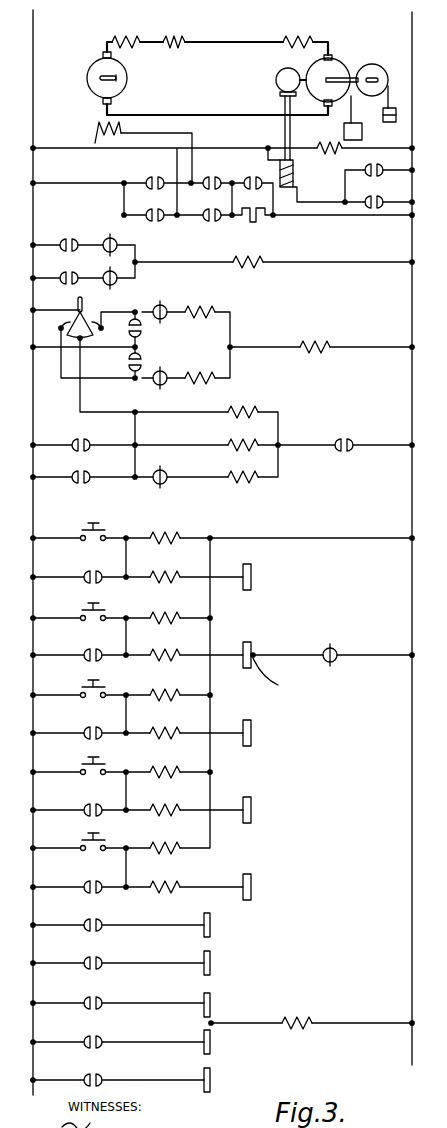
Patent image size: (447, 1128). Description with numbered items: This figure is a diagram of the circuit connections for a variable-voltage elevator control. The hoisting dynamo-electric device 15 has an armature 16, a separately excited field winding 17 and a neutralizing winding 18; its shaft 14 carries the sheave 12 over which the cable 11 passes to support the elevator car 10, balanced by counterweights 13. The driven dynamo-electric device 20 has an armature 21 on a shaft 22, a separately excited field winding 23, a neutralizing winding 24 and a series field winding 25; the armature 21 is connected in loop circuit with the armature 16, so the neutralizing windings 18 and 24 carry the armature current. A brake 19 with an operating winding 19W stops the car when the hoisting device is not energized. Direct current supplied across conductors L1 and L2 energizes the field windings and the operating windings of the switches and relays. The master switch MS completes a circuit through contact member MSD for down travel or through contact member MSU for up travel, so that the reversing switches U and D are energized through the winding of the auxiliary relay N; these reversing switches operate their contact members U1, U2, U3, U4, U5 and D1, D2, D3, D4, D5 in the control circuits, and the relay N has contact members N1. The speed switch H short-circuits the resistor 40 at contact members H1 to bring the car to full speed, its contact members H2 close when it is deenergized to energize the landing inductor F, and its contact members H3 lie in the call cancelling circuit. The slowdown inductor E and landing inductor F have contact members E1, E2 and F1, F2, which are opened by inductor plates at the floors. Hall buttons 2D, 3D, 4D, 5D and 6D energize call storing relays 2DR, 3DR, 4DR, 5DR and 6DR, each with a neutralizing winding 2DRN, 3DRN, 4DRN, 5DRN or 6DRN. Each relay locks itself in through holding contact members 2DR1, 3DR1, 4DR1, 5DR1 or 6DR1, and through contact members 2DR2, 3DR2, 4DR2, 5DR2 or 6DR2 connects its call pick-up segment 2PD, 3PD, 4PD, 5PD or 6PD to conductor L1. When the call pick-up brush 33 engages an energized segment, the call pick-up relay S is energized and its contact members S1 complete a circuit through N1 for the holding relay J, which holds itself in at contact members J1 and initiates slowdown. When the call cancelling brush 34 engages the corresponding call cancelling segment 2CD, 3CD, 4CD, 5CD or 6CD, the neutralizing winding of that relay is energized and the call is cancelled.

The conductor L1 is at (33, 36).
The conductor L2 is at (412, 42).
The driven dynamo-electric device 20 is at (78, 55).
The armature 21 is at (118, 73).
The shaft 22 is at (119, 80).
The neutralizing winding 24 is at (128, 37).
The series field winding 25 is at (176, 37).
The neutralizing winding 18 is at (296, 36).
The hoisting dynamo-electric device 15 is at (352, 27).
The armature 16 is at (310, 70).
The shaft 14 is at (338, 67).
The sheave 12 is at (376, 64).
The cable 11 is at (387, 101).
The counterweights 13 is at (383, 118).
The elevator car 10 is at (362, 132).
The separately excited field winding 17 is at (319, 143).
The brake 19 is at (268, 104).
The operating winding 19W is at (293, 178).
The separately excited field winding 23 is at (122, 131).
The up contact U2 is at (163, 177).
The down contact D1 is at (220, 177).
The contact members H1 is at (260, 177).
The up contact U1 is at (382, 166).
The down contact D2 is at (382, 198).
The down contact D3 is at (148, 209).
The up contact U3 is at (205, 209).
The resistor 40 is at (258, 224).
The up contact U4 is at (70, 239).
The contact members E1 is at (115, 239).
The down contact D4 is at (65, 272).
The contact members E2 is at (113, 275).
The speed switch H is at (242, 258).
The master switch MS is at (68, 306).
The contact member MSD is at (60, 328).
The contact member MSU is at (103, 330).
The contact members F1 is at (166, 306).
The reversing switch U is at (206, 307).
The up contact U5 is at (141, 329).
The down contact D5 is at (141, 362).
The reversing switch D is at (205, 373).
The contact members F2 is at (156, 386).
The auxiliary relay N is at (318, 341).
The holding relay J is at (254, 408).
The contact members J1 is at (98, 433).
The slowdown inductor E is at (250, 441).
The contact members S1 is at (98, 466).
The contact members H2 is at (164, 471).
The landing inductor F is at (250, 473).
The contact members N1 is at (358, 432).
The hall button 6D is at (97, 530).
The call storing relay 6DR is at (176, 533).
The relay contact 6DR1 is at (88, 571).
The neutralizing winding 6DRN is at (175, 573).
The call cancelling segment 6CD is at (251, 568).
The hall button 5D is at (100, 610).
The call storing relay 5DR is at (176, 613).
The contact members 5DR1 is at (88, 649).
The neutralizing winding 5DRN is at (175, 651).
The call cancelling segment 5CD is at (251, 646).
The call cancelling brush 34 is at (275, 678).
The contact members H3 is at (334, 650).
The hall button 4D is at (100, 687).
The call storing relay 4DR is at (176, 690).
The relay contact 4DR1 is at (88, 727).
The neutralizing winding 4DRN is at (175, 729).
The call cancelling segment 4CD is at (251, 726).
The hall button 3D is at (100, 764).
The call storing relay 3DR is at (176, 767).
The relay contact 3DR1 is at (88, 804).
The neutralizing winding 3DRN is at (175, 806).
The call cancelling segment 3CD is at (251, 802).
The hall button 2D is at (84, 840).
The call storing relay 2DR is at (176, 843).
The relay contact 2DR1 is at (88, 881).
The neutralizing winding 2DRN is at (176, 883).
The call cancelling segment 2CD is at (251, 880).
The relay contact 6DR2 is at (102, 921).
The call pick-up segment 6PD is at (210, 922).
The contact members 5DR2 is at (102, 959).
The call pick-up segment 5PD is at (210, 958).
The relay contact 4DR2 is at (102, 999).
The call pick-up segment 4PD is at (210, 1000).
The call pick-up brush 33 is at (213, 1021).
The call pick-up relay S is at (299, 1016).
The relay contact 3DR2 is at (102, 1038).
The call pick-up segment 3PD is at (210, 1040).
The relay contact 2DR2 is at (102, 1076).
The call pick-up segment 2PD is at (210, 1078).